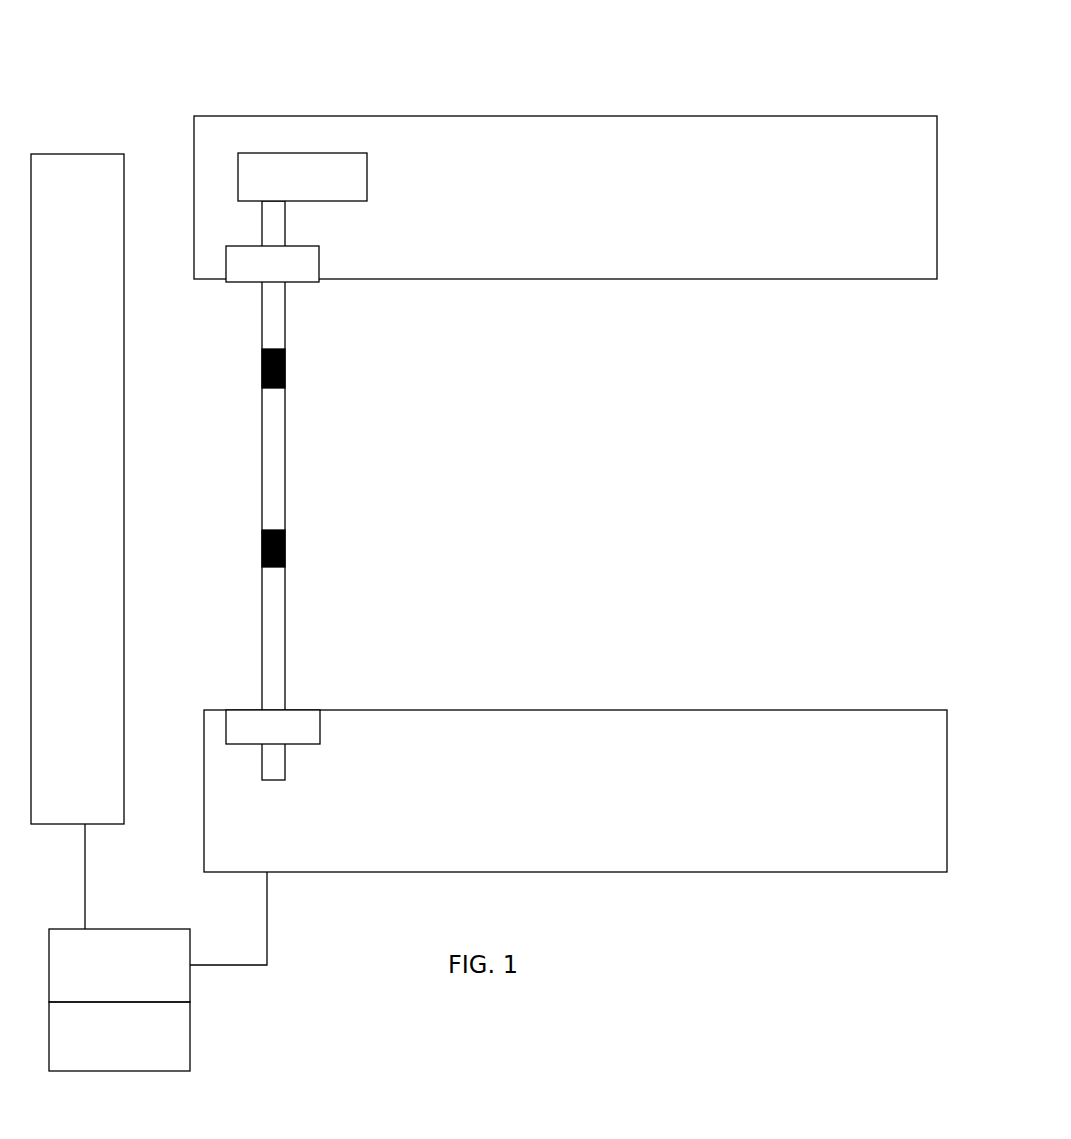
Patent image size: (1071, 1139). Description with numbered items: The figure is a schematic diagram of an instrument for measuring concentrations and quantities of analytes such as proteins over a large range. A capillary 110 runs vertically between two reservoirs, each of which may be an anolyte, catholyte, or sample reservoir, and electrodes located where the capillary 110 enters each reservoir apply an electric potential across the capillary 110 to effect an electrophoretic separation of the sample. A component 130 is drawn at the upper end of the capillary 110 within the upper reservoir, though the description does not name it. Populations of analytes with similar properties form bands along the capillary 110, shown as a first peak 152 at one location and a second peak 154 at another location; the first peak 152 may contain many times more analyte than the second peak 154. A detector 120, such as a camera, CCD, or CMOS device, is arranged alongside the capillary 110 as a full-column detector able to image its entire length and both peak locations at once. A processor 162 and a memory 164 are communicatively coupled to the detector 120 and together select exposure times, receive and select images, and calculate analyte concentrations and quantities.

The capillary 110 is at (285, 495).
The detector 120 is at (77, 154).
The motor 130 is at (367, 183).
The first peak 152 is at (285, 377).
The second peak 154 is at (285, 558).
The processor 162 is at (119, 965).
The memory 164 is at (119, 1036).